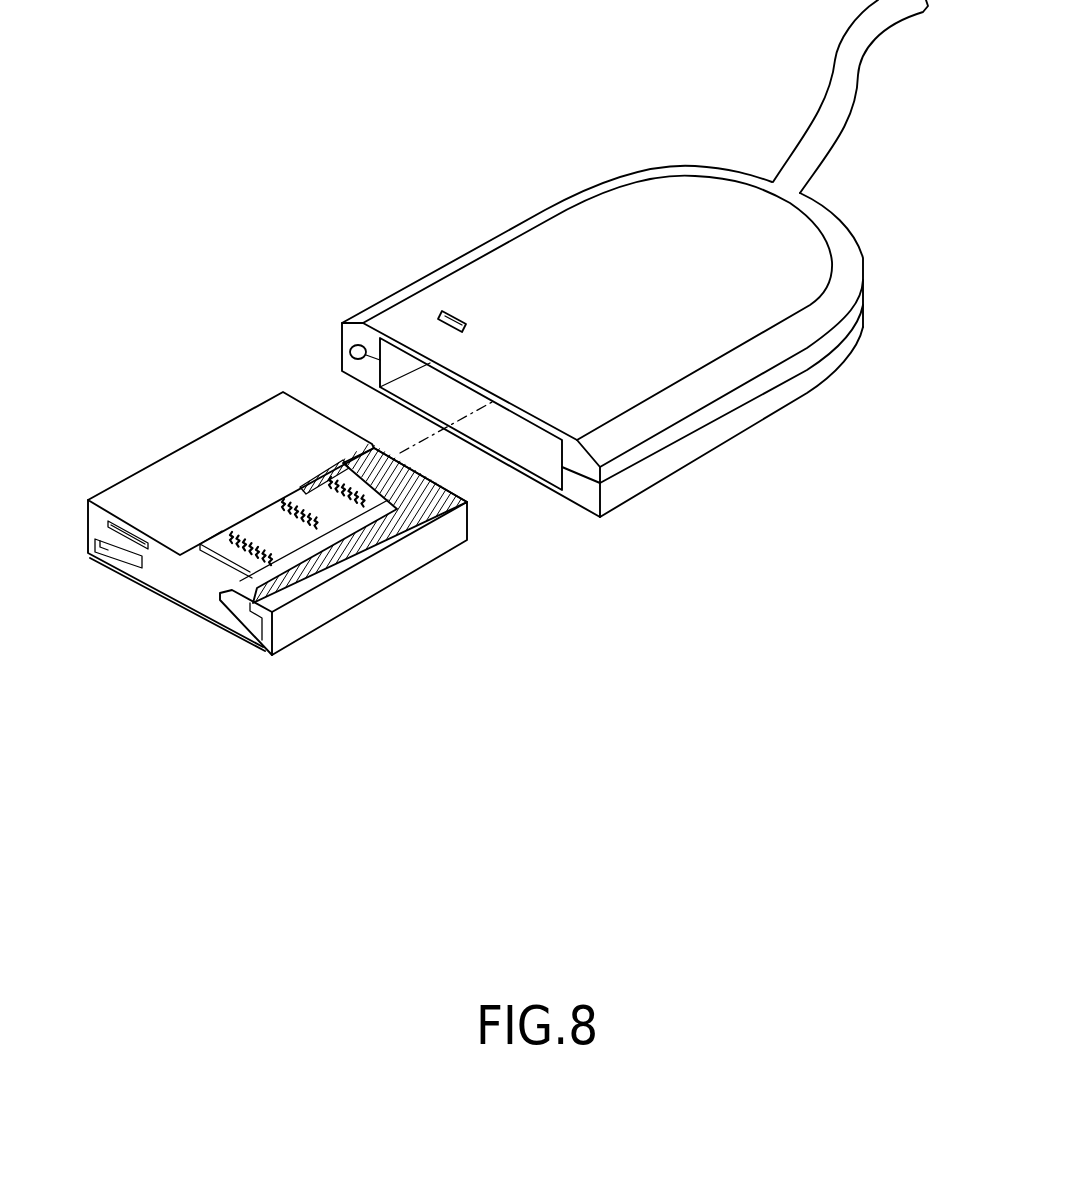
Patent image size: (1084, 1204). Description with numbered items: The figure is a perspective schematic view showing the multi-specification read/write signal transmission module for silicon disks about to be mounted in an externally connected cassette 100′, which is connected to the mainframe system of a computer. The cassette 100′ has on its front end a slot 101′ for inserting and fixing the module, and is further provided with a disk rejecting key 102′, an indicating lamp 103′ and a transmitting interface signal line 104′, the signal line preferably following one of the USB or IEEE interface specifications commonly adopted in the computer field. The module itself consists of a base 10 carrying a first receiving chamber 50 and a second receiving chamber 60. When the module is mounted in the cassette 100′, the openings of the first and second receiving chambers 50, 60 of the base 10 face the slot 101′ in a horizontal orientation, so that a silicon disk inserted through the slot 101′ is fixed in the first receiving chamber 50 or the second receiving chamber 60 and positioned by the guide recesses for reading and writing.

The cassette 100′ is at (565, 248).
The slot 101′ is at (518, 440).
The disk rejecting key 102′ is at (350, 352).
The indicating lamp 103′ is at (446, 312).
The transmitting interface signal line 104′ is at (810, 160).
The base 10 is at (245, 608).
The first receiving chamber 50 is at (168, 553).
The second receiving chamber 60 is at (140, 553).